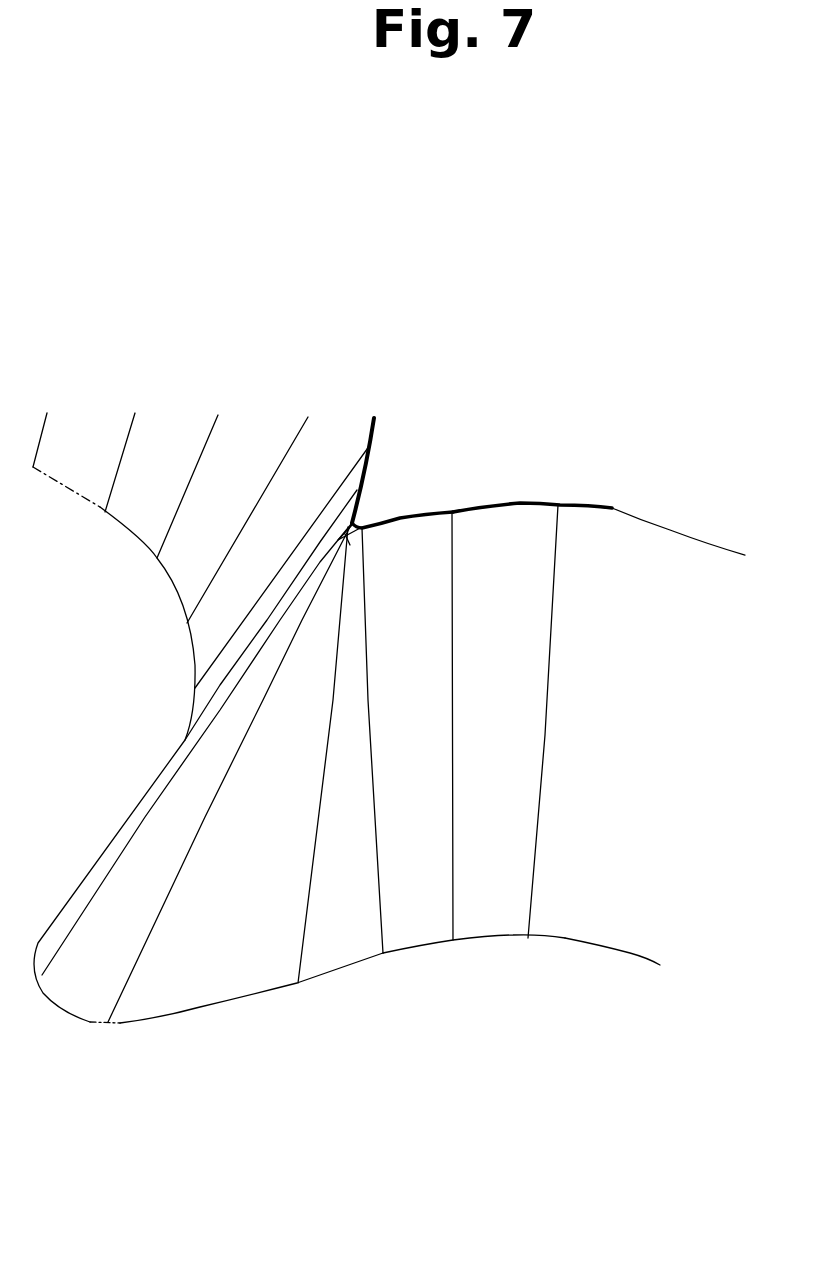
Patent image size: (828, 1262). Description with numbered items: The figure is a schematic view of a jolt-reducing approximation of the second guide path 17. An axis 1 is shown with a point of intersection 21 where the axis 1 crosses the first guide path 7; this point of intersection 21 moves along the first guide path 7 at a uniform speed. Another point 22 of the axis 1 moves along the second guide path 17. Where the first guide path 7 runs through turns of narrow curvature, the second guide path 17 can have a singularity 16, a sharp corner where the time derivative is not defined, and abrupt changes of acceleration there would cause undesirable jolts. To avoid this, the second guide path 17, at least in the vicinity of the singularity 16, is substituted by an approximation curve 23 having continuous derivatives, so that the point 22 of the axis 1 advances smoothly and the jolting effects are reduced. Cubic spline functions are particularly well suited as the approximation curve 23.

The axis 1 is at (545, 733).
The first guide path 7 is at (597, 945).
The singularity 16 is at (355, 520).
The second guide path 17 is at (612, 508).
The point of intersection 21 is at (527, 940).
The point of the axis 22 is at (558, 505).
The approximation curve 23 is at (418, 513).